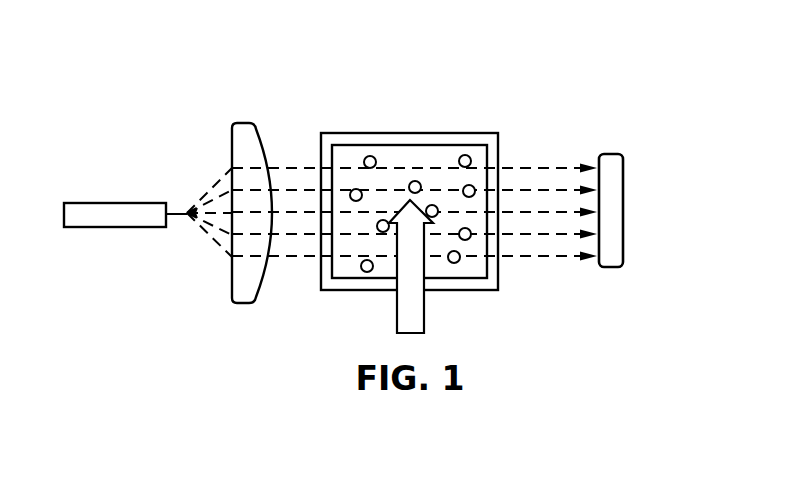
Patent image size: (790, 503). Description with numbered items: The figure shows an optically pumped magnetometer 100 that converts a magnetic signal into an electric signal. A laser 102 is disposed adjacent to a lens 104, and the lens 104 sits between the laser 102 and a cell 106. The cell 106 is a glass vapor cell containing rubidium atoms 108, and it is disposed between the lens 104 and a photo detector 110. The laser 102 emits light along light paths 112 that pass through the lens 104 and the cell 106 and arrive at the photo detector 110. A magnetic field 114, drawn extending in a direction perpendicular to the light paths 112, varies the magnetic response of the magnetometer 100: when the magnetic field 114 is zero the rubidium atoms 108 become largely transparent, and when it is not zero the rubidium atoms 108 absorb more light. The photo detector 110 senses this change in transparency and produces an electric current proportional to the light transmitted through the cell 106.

The optically pumped magnetometer 100 is at (163, 58).
The laser 102 is at (115, 203).
The lens 104 is at (242, 123).
The cell 106 is at (408, 133).
The rubidium atoms 108 is at (366, 156).
The photo detector 110 is at (623, 198).
The light paths 112 is at (532, 156).
The magnetic field 114 is at (425, 312).